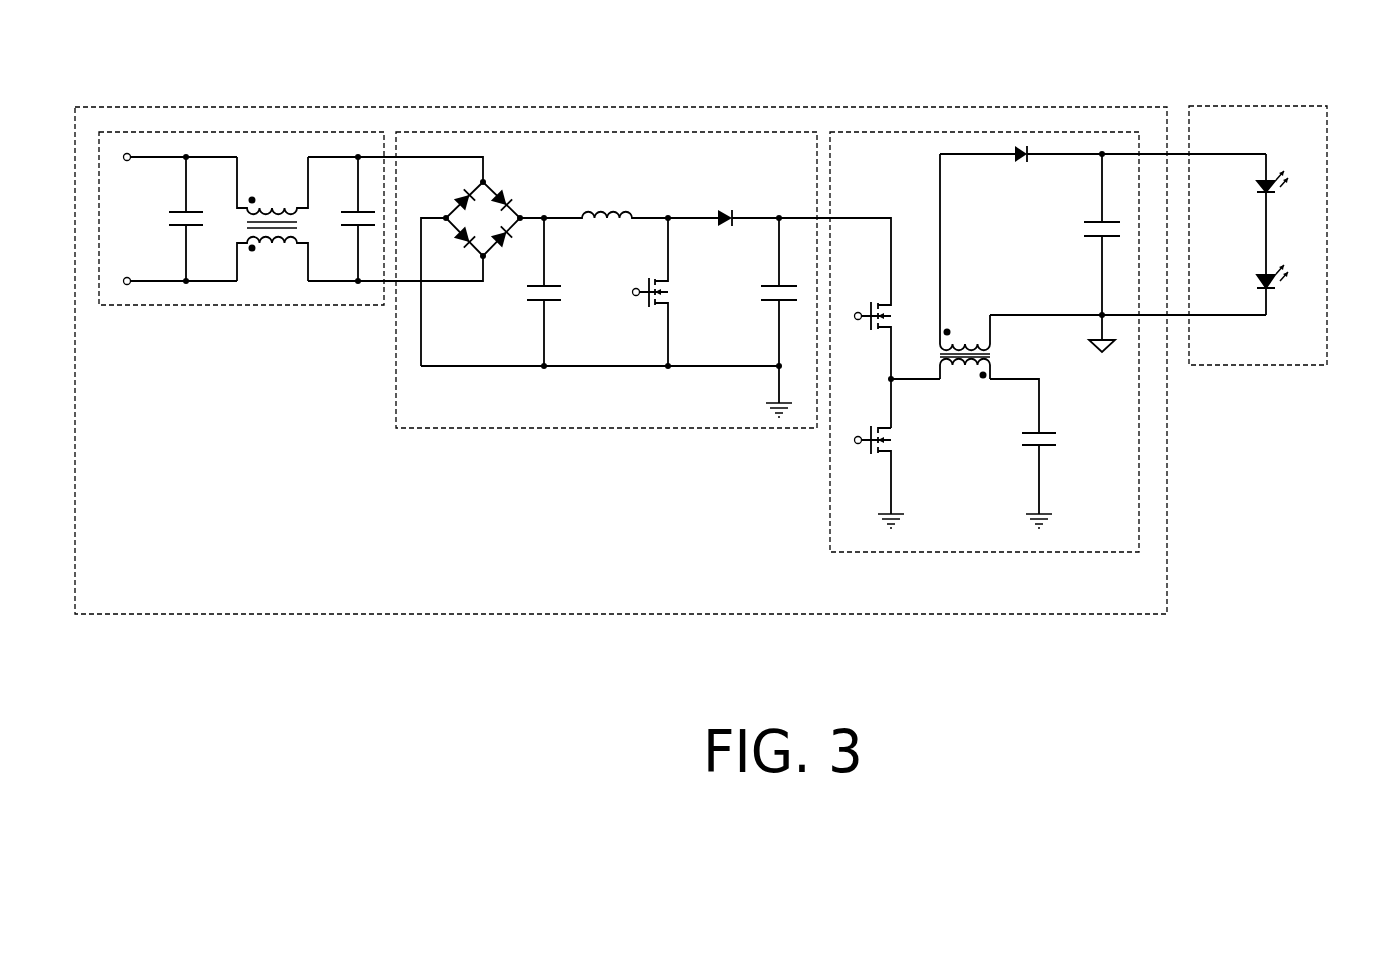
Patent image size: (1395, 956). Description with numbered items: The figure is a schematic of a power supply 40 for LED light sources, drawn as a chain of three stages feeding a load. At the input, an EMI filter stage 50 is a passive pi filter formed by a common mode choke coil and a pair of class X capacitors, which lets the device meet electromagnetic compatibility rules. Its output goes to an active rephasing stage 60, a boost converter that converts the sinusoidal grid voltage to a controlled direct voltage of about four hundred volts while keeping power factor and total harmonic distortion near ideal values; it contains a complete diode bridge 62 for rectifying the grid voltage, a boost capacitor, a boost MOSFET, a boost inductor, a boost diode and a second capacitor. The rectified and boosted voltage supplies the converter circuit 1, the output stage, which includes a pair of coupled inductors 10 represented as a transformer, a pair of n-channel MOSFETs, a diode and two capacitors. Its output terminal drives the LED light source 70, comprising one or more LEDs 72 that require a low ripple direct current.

The converter circuit 1 is at (892, 559).
The pair of coupled inductors 10 is at (969, 378).
The power supply 40 is at (333, 619).
The EMI filter stage 50 is at (181, 312).
The active rephasing stage 60 is at (568, 436).
The diode bridge 62 is at (489, 183).
The LED light source 70 is at (1249, 103).
The LED 72 is at (1272, 192).